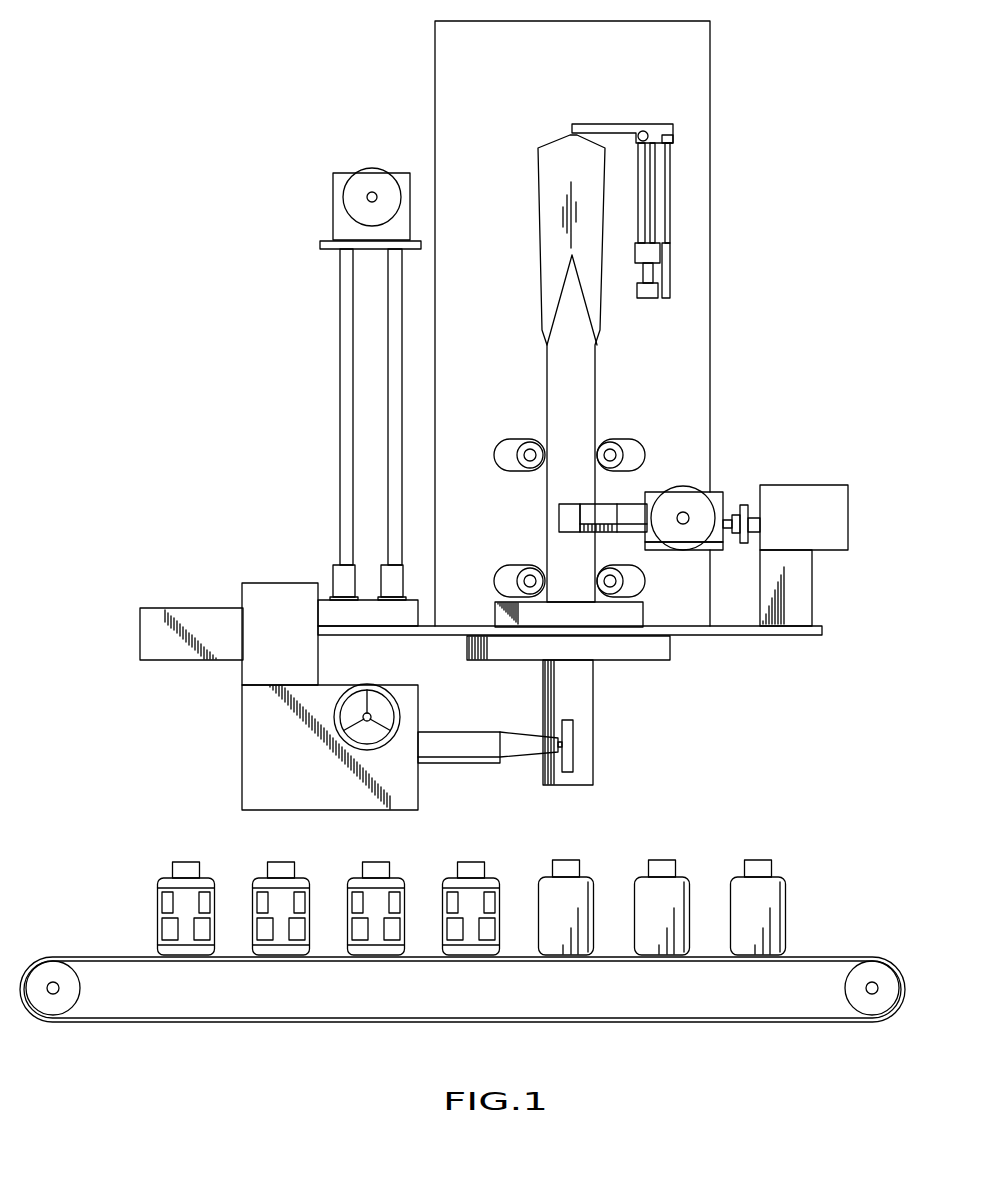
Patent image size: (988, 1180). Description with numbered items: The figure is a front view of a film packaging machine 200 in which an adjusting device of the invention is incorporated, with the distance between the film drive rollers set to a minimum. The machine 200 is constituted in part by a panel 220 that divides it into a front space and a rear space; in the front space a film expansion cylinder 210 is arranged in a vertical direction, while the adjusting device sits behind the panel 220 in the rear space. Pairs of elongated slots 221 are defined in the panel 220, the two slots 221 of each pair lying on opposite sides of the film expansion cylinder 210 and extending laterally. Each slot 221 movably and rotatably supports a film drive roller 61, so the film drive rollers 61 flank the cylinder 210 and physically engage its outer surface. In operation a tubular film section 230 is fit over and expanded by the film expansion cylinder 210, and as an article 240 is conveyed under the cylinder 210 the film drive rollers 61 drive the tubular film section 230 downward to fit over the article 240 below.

The film packaging machine 200 is at (775, 205).
The film expansion cylinder 210 is at (582, 378).
The panel 220 is at (475, 115).
The elongated slots 221 is at (503, 453).
The film drive roller 61 is at (522, 443).
The tubular film section 230 is at (183, 917).
The article 240 is at (460, 867).